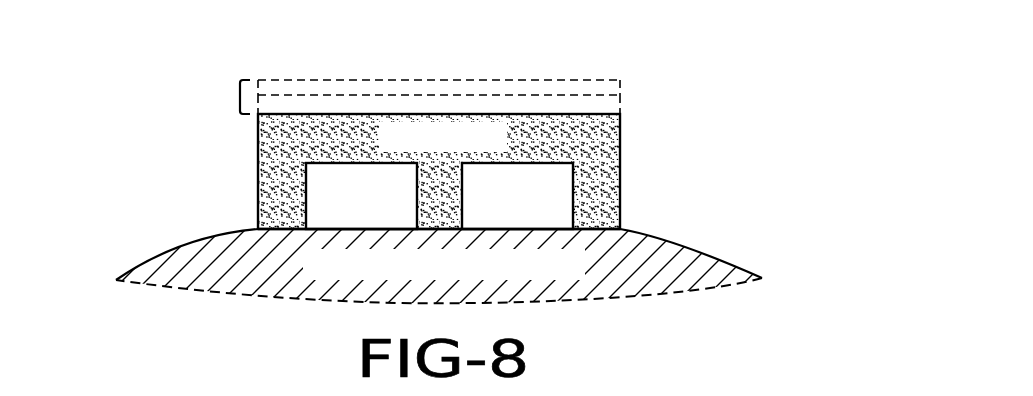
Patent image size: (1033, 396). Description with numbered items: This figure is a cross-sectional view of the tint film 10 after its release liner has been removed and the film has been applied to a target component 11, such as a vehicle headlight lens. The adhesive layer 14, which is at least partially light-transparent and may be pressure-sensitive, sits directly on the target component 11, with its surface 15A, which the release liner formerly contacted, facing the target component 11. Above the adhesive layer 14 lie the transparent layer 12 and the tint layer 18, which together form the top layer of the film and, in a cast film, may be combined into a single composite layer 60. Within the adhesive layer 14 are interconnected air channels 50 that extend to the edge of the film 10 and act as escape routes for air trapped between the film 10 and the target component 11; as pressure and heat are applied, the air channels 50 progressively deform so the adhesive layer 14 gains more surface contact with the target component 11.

The tint film 10 is at (262, 50).
The target component 11 is at (658, 272).
The transparent layer 12 is at (602, 106).
The adhesive layer 14 is at (595, 135).
The surface of adhesive layer 15A is at (285, 230).
The tint layer 18 is at (593, 86).
The air channels 50 is at (360, 163).
The composite layer 60 is at (238, 97).